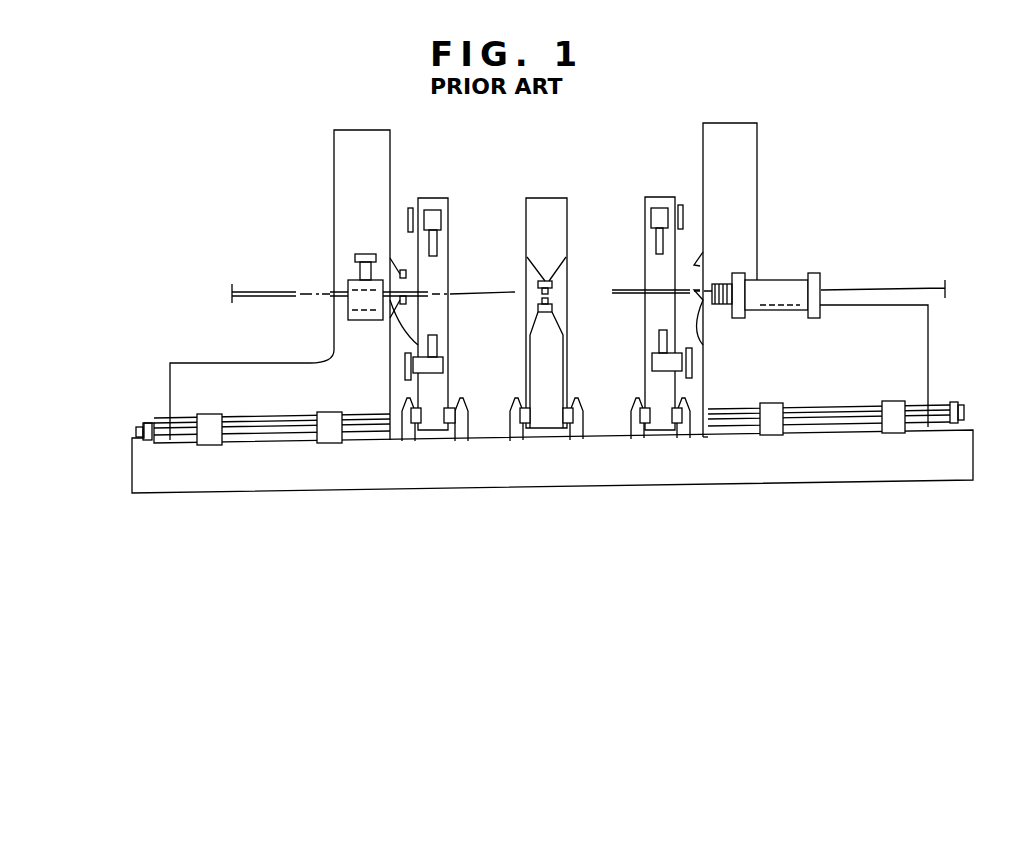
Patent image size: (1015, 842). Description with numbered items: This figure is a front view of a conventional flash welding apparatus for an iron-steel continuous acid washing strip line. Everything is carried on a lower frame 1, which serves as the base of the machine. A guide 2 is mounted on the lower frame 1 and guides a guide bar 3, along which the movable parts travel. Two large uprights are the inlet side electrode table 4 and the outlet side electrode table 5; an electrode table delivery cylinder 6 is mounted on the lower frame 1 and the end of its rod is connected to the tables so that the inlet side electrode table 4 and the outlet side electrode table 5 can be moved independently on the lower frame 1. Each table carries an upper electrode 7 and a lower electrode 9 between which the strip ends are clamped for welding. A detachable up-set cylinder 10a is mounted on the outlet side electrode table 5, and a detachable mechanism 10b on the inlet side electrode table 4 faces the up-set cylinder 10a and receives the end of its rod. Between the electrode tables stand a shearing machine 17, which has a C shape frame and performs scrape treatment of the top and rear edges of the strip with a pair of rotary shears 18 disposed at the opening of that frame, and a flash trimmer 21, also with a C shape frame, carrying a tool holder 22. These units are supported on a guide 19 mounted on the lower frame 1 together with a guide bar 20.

The lower frame 1 is at (420, 497).
The guide 2 is at (892, 401).
The guide bar 3 is at (270, 418).
The inlet side electrode table 4 is at (353, 130).
The outlet side electrode table 5 is at (730, 123).
The electrode table delivery cylinder 6 is at (150, 420).
The upper electrode 7 is at (405, 274).
The lower electrode 9 is at (396, 300).
The detachable up-set cylinder 10a is at (742, 275).
The detachable mechanism 10b is at (348, 280).
The shearing machine 17 is at (440, 198).
The pair of rotary shears 18 is at (410, 208).
The guide 19 is at (402, 402).
The guide bar 20 is at (420, 408).
The flash trimmer 21 is at (545, 198).
The tool holder 22 is at (553, 306).